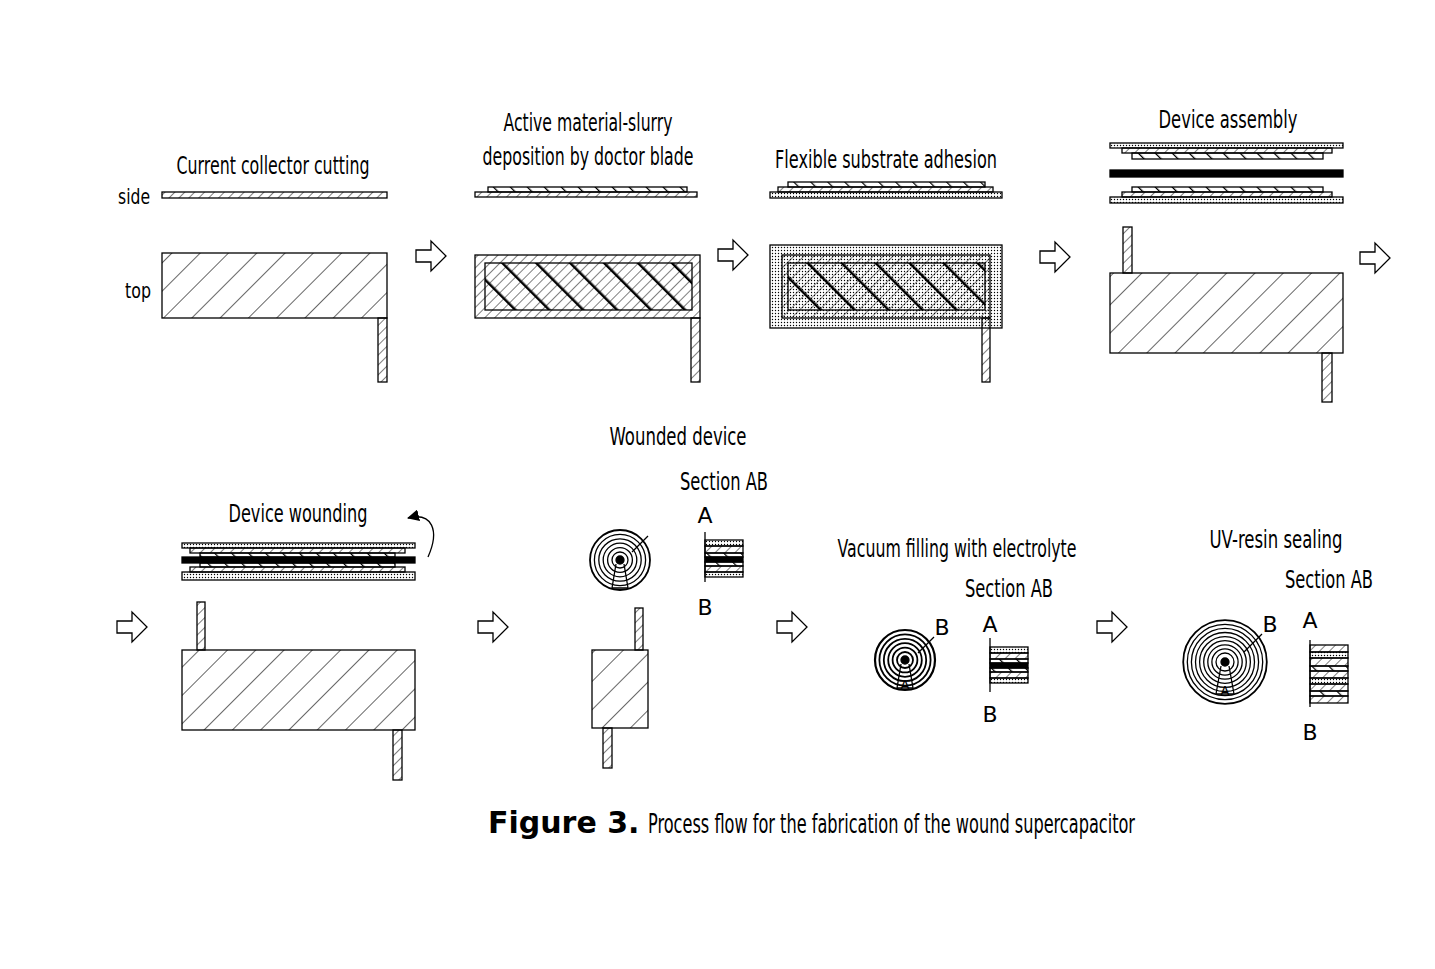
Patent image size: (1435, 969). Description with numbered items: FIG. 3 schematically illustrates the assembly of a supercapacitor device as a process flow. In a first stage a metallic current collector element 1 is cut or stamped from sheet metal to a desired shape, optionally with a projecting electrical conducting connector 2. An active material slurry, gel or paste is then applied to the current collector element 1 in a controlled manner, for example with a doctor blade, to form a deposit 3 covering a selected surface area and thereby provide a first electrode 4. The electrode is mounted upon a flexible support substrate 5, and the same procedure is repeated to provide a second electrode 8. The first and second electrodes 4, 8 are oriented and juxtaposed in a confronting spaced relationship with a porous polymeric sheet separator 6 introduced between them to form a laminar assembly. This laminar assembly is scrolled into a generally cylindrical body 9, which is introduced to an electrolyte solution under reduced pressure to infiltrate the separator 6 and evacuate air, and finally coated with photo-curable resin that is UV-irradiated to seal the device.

The metallic current collector element 1 is at (377, 268).
The projecting electrical conducting connector 2 is at (382, 369).
The deposit 3 is at (483, 266).
The first electrode 4 is at (918, 219).
The flexible support substrate 5 is at (998, 258).
The porous polymeric sheet separator 6 is at (1112, 173).
The second electrode 8 is at (1340, 213).
The generally cylindrical body 9 is at (598, 526).